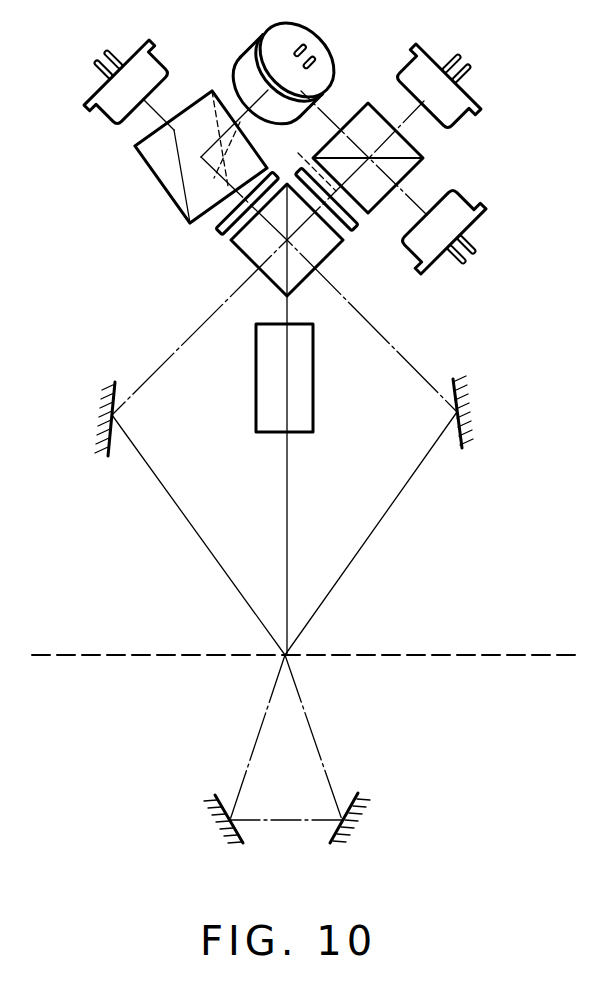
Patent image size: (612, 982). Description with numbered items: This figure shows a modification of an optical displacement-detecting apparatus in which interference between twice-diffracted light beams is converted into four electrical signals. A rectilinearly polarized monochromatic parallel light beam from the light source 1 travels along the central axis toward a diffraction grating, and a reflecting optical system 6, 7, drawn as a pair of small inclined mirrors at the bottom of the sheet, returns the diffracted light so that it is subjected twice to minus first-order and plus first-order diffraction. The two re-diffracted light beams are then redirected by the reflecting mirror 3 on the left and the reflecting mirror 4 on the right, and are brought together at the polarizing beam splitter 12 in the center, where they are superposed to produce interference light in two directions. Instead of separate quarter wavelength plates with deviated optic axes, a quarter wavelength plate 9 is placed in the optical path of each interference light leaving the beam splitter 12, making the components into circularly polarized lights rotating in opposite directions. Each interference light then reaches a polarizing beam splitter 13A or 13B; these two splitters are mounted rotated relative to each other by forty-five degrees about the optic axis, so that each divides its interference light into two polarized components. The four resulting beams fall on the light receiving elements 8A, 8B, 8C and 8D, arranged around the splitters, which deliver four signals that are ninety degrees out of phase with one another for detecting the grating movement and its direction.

The light source 1 is at (314, 382).
The reflecting mirror 3 is at (100, 415).
The reflecting mirror 4 is at (463, 412).
The reflecting optical system element 6 is at (213, 822).
The reflecting optical system element 7 is at (353, 823).
The light receiving element 8A is at (466, 118).
The light receiving element 8B is at (106, 117).
The light receiving element 8C is at (478, 231).
The light receiving element 8D is at (251, 48).
The quarter wavelength plate 9 is at (220, 228).
The polarizing beam splitter 12 is at (290, 276).
The polarizing beam splitter 13A is at (424, 162).
The polarizing beam splitter 13B is at (147, 181).